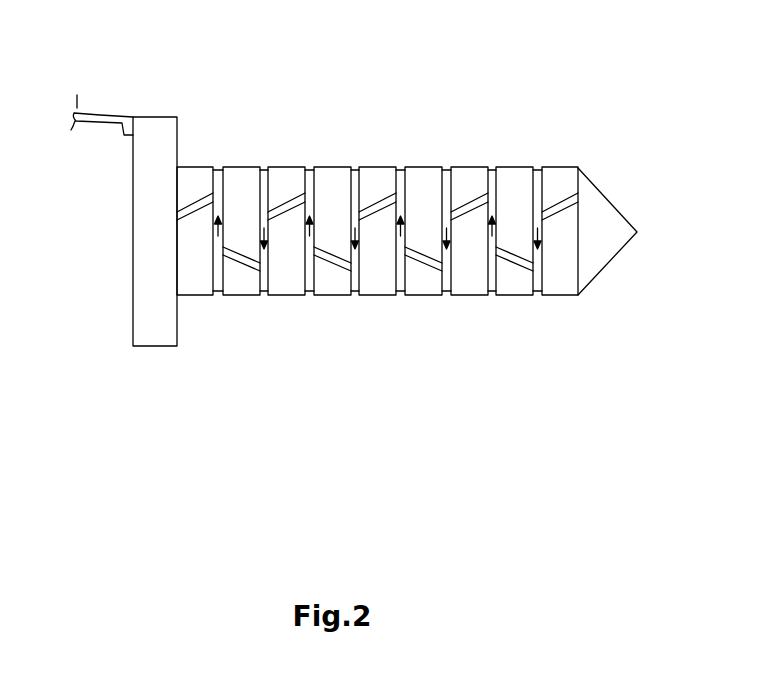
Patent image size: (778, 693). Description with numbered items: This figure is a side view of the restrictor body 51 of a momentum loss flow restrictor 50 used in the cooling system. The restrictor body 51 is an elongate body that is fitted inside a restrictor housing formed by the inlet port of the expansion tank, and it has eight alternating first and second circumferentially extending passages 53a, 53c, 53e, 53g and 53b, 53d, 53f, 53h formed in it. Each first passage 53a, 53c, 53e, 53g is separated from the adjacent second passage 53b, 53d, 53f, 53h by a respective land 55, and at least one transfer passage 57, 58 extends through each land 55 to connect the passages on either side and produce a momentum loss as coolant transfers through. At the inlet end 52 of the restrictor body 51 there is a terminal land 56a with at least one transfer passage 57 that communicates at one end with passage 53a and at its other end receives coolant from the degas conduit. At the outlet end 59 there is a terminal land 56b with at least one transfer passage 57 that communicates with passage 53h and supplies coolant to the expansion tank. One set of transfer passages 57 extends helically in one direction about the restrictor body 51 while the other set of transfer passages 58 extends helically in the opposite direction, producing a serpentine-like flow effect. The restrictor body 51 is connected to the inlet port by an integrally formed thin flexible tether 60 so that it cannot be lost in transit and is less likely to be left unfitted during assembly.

The momentum loss flow restrictor 50 is at (432, 90).
The restrictor body 51 is at (399, 244).
The inlet end 52 is at (140, 345).
The first circumferentially extending passage 53a is at (218, 291).
The second circumferentially extending passage 53b is at (264, 291).
The first circumferentially extending passage 53c is at (310, 291).
The second circumferentially extending passage 53d is at (355, 291).
The first circumferentially extending passage 53e is at (400, 291).
The second circumferentially extending passage 53f is at (446, 291).
The first circumferentially extending passage 53g is at (492, 291).
The second circumferentially extending passage 53h is at (538, 291).
The land 55 is at (247, 167).
The terminal land 56a is at (198, 167).
The terminal land 56b is at (561, 168).
The transfer passage 57 is at (190, 205).
The transfer passage 58 is at (233, 266).
The outlet end 59 is at (602, 192).
The flexible tether 60 is at (92, 115).